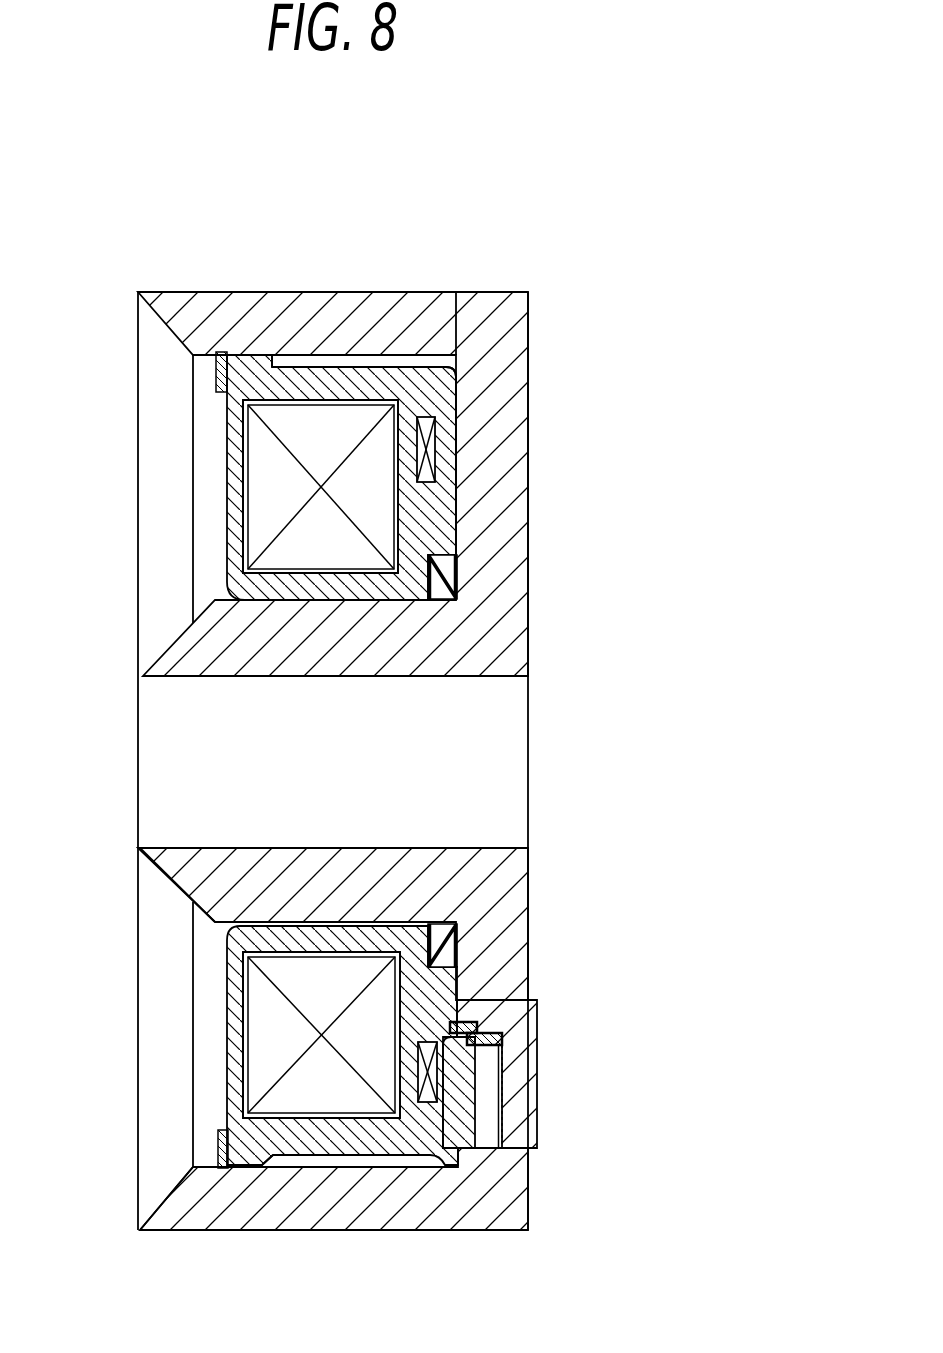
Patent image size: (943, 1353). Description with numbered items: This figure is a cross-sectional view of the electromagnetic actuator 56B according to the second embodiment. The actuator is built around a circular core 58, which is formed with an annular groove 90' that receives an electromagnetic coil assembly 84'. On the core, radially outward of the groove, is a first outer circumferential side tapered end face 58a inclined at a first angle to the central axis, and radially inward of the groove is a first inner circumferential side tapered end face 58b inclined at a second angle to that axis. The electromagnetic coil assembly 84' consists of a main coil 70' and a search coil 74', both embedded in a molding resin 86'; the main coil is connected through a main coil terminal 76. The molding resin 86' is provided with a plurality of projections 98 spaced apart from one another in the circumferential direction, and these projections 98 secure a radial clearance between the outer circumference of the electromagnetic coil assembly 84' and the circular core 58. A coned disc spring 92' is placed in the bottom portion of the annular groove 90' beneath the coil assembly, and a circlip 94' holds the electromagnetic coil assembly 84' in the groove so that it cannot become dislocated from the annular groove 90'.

The electromagnetic actuator 56B is at (488, 262).
The circular core 58 is at (377, 1213).
The first outer circumferential side tapered end face 58a is at (178, 1184).
The first inner circumferential side tapered end face 58b is at (192, 902).
The main coil 70' is at (241, 486).
The search coil 74' is at (497, 449).
The main coil terminal 76 is at (503, 1095).
The electromagnetic coil assembly 84' is at (359, 292).
The molding resin 86' is at (416, 477).
The annular groove 90' is at (448, 309).
The coned disc spring 92' is at (510, 577).
The circlip 94' is at (156, 374).
The projections 98 is at (247, 355).